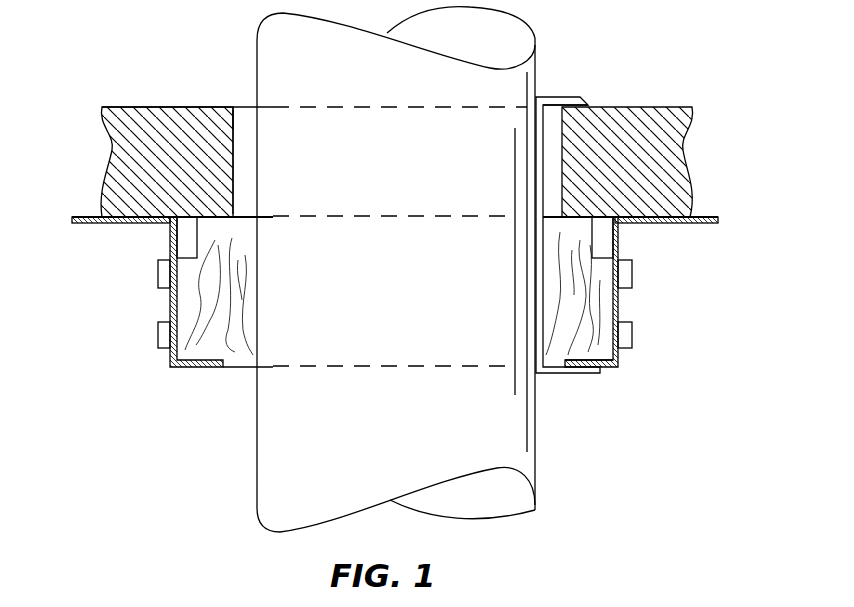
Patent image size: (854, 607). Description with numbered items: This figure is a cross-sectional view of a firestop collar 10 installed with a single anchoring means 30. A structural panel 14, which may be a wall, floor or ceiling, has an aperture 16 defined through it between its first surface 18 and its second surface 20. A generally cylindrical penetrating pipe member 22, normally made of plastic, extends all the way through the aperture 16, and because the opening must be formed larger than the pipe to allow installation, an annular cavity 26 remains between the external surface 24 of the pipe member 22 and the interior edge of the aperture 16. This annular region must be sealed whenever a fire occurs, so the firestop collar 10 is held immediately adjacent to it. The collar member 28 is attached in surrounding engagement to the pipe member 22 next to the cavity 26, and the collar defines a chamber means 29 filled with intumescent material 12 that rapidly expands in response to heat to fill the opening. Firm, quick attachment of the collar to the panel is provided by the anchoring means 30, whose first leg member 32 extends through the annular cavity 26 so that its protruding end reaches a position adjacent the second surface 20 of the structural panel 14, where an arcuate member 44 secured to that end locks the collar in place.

The firestop collar 10 is at (623, 357).
The intumescent material 12 is at (207, 300).
The structural panel 14 is at (655, 163).
The aperture 16 is at (233, 118).
The first surface 18 is at (117, 222).
The second surface 20 is at (128, 107).
The penetrating pipe member 22 is at (403, 432).
The external surface 24 is at (257, 422).
The cavity 26 is at (242, 150).
The collar member 28 is at (623, 302).
The chamber means 29 is at (612, 324).
The anchoring means 30 is at (548, 97).
The first leg member 32 is at (534, 278).
The arcuate member 44 is at (572, 100).